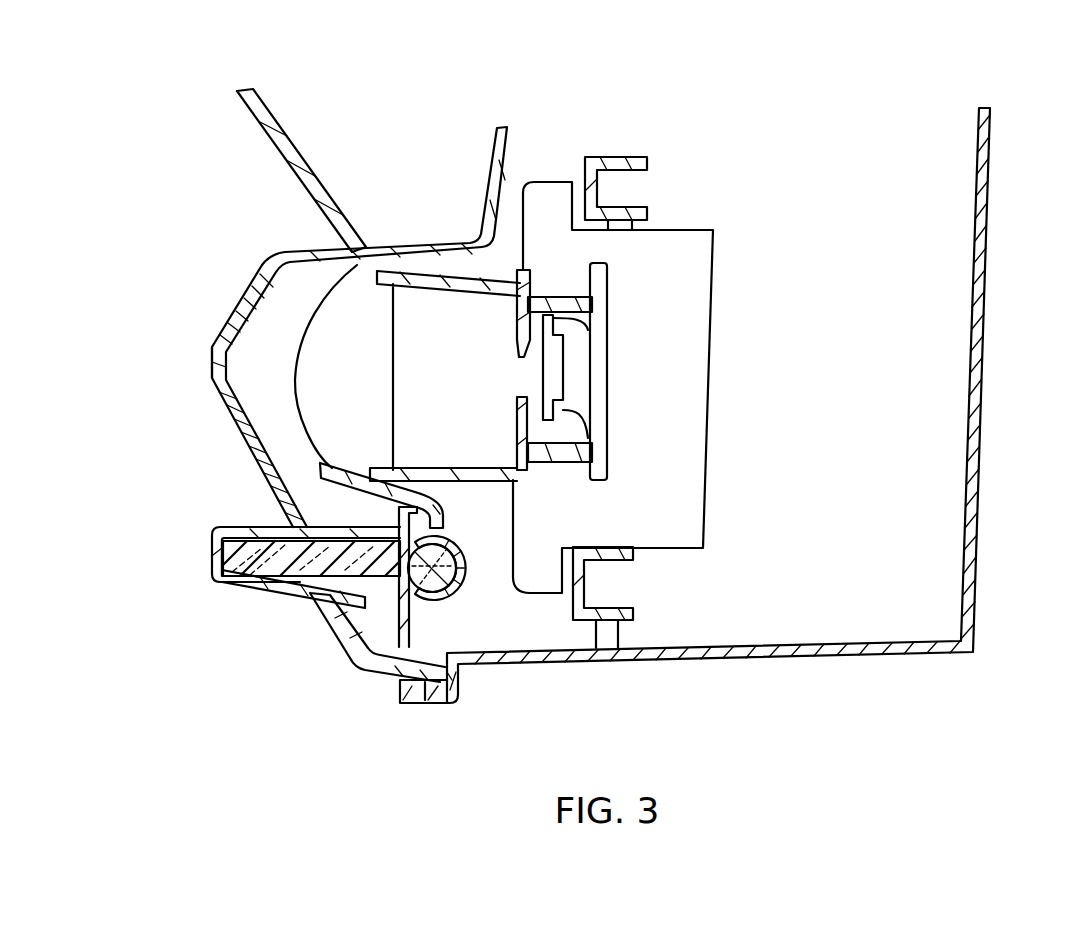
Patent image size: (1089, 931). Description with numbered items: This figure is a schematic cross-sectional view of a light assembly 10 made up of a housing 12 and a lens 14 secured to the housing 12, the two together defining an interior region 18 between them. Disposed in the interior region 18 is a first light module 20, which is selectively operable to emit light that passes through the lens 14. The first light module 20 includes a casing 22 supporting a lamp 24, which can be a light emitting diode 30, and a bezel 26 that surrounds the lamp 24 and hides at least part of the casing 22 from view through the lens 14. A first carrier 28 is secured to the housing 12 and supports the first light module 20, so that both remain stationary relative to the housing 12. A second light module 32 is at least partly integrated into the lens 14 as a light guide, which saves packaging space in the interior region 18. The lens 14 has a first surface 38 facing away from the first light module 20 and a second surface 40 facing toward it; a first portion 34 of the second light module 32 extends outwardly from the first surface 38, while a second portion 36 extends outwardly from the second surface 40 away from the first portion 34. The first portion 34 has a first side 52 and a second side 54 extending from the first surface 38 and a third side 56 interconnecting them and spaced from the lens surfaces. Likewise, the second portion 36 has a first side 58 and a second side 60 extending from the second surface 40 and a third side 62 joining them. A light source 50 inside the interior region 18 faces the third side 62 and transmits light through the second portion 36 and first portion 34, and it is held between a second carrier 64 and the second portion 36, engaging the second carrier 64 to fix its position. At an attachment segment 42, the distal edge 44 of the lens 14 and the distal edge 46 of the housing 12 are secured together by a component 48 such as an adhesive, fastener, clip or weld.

The light assembly 10 is at (396, 98).
The housing 12 is at (987, 222).
The lens 14 is at (300, 155).
The interior region 18 is at (782, 632).
The first light module 20 is at (276, 309).
The casing 22 is at (713, 268).
The lamp 24 is at (506, 245).
The bezel 26 is at (480, 210).
The first carrier 28 is at (622, 156).
The light emitting diode 30 is at (545, 385).
The second light module 32 is at (377, 632).
The first portion 34 is at (238, 562).
The second portion 36 is at (350, 598).
The first surface 38 is at (213, 372).
The second surface 40 is at (232, 372).
The attachment segment 42 is at (380, 697).
The distal edge 44 is at (447, 695).
The distal edge 46 is at (405, 705).
The component 48 is at (427, 690).
The light source 50 is at (432, 595).
The first side 52 is at (262, 580).
The second side 54 is at (246, 528).
The third side 56 is at (213, 546).
The first side 58 is at (365, 605).
The second side 60 is at (358, 530).
The third side 62 is at (445, 565).
The second carrier 64 is at (447, 540).